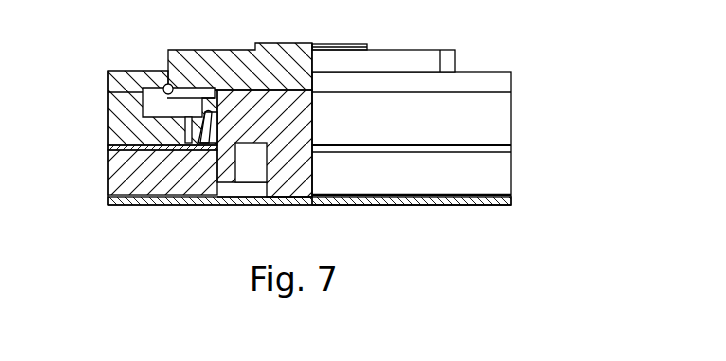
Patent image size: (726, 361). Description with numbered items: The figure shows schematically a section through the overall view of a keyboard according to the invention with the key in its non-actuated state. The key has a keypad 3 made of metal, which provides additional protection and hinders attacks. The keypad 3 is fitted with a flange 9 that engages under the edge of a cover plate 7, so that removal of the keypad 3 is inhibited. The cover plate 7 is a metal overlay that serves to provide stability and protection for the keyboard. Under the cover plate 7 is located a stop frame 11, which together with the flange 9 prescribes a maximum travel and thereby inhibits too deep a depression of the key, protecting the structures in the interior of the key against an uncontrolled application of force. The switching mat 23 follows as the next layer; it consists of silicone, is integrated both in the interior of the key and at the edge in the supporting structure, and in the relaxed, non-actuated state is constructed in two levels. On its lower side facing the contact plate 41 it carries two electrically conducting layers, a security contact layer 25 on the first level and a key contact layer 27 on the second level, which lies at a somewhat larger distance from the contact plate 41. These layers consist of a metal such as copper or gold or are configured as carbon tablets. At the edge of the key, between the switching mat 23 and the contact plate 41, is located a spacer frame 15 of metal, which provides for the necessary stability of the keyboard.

The keypad 3 is at (200, 50).
The cover plate 7 is at (497, 77).
The flange 9 is at (153, 97).
The stop frame 11 is at (112, 123).
The spacer frame 15 is at (500, 182).
The switching mat 23 is at (503, 150).
The security contact layer 25 is at (291, 199).
The key contact layer 27 is at (231, 183).
The contact plate 41 is at (477, 200).